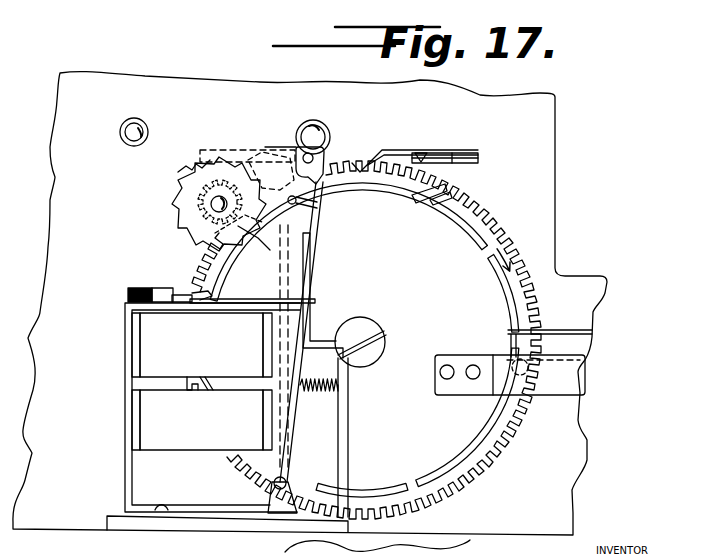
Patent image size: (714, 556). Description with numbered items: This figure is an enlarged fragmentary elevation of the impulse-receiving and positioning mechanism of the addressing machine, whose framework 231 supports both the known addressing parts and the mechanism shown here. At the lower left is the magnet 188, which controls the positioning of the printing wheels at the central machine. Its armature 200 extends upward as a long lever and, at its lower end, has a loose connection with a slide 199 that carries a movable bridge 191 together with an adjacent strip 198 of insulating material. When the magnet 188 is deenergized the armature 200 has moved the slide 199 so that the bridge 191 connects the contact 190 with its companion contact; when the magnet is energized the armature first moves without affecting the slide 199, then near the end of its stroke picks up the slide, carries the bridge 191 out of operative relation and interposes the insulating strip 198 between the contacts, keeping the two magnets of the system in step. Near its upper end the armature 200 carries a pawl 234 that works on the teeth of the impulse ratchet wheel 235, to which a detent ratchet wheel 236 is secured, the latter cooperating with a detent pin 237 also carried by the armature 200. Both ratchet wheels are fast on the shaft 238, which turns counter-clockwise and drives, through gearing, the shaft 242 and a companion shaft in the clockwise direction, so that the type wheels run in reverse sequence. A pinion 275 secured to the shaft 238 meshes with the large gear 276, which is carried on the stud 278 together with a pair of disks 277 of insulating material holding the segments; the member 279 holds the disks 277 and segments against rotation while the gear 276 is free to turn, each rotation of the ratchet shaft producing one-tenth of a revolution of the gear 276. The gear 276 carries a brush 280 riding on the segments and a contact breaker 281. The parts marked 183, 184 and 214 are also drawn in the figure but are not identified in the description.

The stop block 183 is at (432, 153).
The detent lever 184 is at (395, 150).
The magnet 188 is at (212, 407).
The contact 190 is at (158, 287).
The movable bridge 191 is at (175, 301).
The strip of insulating material 198 is at (190, 300).
The slide 199 is at (250, 279).
The armature 200 is at (307, 282).
The ring segments 214 is at (497, 277).
The framework 231 is at (560, 452).
The pawl 234 is at (253, 157).
The impulse ratchet wheel 235 is at (211, 202).
The detent ratchet wheel 236 is at (180, 172).
The detent pin 237 is at (323, 201).
The shaft 238 is at (212, 205).
The shaft 242 is at (141, 128).
The pinion 275 is at (215, 236).
The large gear 276 is at (489, 219).
The disks of insulating material 277 is at (430, 296).
The stud 278 is at (378, 346).
The member 279 is at (562, 377).
The brush 280 is at (426, 186).
The contact breaker 281 is at (455, 197).